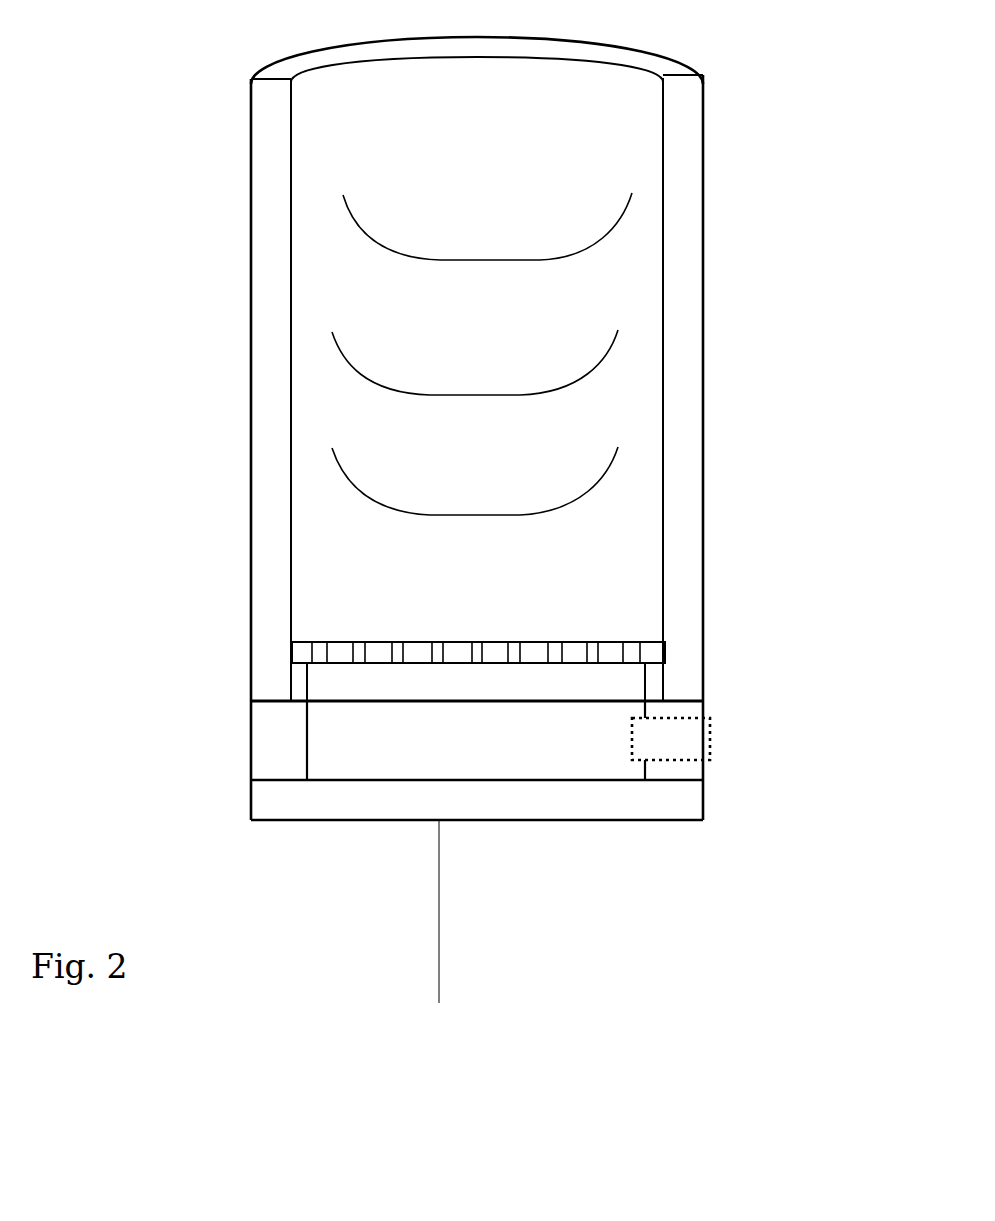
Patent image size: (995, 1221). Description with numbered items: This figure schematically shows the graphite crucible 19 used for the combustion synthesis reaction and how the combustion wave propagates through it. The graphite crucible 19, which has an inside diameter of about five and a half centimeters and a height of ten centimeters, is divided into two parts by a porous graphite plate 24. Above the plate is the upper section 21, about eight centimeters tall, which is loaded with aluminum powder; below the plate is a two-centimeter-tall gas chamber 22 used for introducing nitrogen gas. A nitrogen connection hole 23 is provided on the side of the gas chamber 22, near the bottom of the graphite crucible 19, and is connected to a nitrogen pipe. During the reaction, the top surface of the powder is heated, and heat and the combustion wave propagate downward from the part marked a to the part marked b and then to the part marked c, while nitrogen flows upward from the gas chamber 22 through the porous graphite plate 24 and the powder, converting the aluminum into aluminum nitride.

The graphite crucible 19 is at (748, 390).
The upper section 21 is at (268, 276).
The gas chamber 22 is at (280, 723).
The nitrogen connection hole 23 is at (746, 738).
The porous graphite plate 24 is at (356, 619).